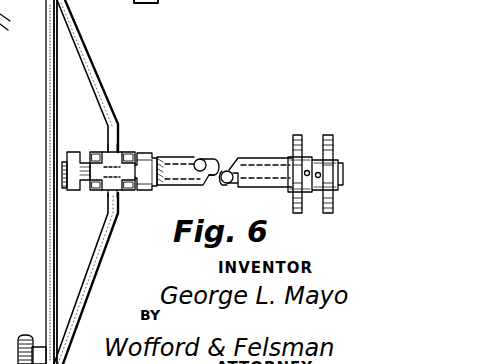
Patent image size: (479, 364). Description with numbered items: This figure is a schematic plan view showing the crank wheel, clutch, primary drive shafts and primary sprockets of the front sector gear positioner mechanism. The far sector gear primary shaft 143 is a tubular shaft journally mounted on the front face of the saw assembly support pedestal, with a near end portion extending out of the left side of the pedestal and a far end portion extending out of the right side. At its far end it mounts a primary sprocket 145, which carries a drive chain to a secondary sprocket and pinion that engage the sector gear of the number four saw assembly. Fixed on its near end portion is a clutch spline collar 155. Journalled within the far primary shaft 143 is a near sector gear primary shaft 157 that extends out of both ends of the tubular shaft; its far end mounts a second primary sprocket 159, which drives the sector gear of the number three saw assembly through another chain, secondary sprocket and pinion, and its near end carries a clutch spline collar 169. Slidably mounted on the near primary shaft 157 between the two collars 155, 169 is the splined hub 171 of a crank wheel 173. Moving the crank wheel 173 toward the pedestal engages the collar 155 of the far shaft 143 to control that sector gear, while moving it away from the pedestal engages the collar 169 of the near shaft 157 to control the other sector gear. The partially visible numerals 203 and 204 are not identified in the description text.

The far sector gear primary shaft 143 is at (191, 155).
The primary sprocket 145 is at (297, 134).
The clutch spline collar 155 is at (142, 152).
The near sector gear primary shaft 157 is at (233, 156).
The primary sprocket 159 is at (329, 134).
The clutch spline collar 169 is at (77, 191).
The splined hub 171 is at (126, 191).
The crank wheel 173 is at (45, 302).
The member 203 is at (201, 7).
The member 204 is at (7, 112).